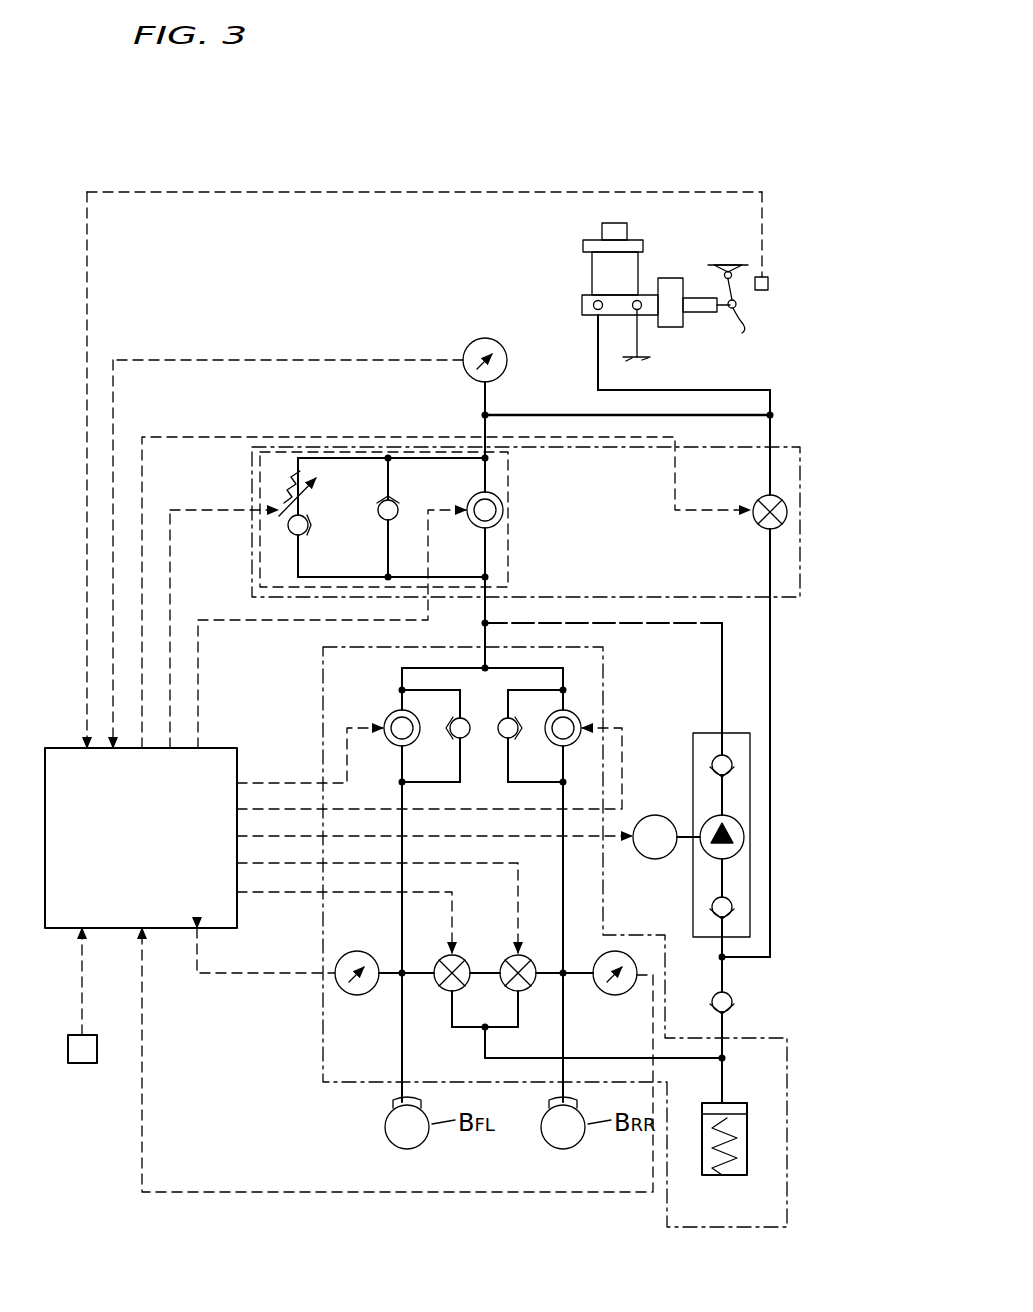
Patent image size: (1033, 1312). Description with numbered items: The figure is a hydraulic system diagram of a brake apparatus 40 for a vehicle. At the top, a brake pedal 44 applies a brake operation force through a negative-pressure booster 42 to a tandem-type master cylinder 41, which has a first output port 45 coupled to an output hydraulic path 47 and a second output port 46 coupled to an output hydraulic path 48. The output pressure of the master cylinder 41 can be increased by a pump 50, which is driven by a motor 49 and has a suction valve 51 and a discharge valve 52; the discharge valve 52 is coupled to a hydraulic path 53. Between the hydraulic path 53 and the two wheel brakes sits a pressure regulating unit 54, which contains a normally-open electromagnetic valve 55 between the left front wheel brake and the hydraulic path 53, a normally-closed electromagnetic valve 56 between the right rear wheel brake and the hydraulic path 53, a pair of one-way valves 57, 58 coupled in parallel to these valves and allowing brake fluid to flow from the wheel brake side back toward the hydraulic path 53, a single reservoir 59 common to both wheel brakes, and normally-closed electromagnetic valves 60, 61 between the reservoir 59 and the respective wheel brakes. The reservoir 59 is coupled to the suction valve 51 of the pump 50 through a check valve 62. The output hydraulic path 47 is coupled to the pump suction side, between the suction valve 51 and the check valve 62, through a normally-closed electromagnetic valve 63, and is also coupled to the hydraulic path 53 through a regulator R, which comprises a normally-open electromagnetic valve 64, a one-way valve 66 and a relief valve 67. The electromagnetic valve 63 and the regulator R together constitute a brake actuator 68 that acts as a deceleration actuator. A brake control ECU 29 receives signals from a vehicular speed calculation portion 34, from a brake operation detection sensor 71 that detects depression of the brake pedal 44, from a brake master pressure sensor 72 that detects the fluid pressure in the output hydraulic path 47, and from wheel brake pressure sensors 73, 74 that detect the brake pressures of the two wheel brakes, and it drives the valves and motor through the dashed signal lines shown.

The brake apparatus 40 is at (215, 176).
The brake control ECU 29 is at (218, 746).
The vehicular speed calculation portion 34 is at (84, 1063).
The brake operation detection sensor 71 is at (768, 284).
The master cylinder 41 is at (582, 298).
The first output port 45 is at (593, 308).
The second output port 46 is at (640, 300).
The negative-pressure booster 42 is at (672, 278).
The output hydraulic path 48 is at (638, 353).
The brake pedal 44 is at (748, 325).
The brake master pressure sensor 72 is at (508, 360).
The output hydraulic path 47 is at (560, 414).
The brake actuator 68 is at (787, 448).
The regulator R is at (508, 475).
The hydraulic path 53 is at (495, 605).
The relief valve 67 is at (308, 527).
The one-way valve 66 is at (396, 504).
The normally-open electromagnetic valve 64 is at (504, 510).
The normally-closed electromagnetic valve 63 is at (763, 529).
The pressure regulating unit 54 is at (323, 1060).
The normally-open electromagnetic valve 55 is at (415, 722).
The one-way valve 57 is at (468, 720).
The one-way valve 58 is at (518, 722).
The normally-closed electromagnetic valve 56 is at (578, 718).
The pump 50 is at (740, 733).
The discharge valve 52 is at (733, 771).
The suction valve 51 is at (733, 912).
The motor 49 is at (660, 860).
The check valve 62 is at (733, 1008).
The reservoir 59 is at (747, 1137).
The wheel brake pressure sensor 73 is at (358, 996).
The normally-closed electromagnetic valve 60 is at (445, 993).
The normally-closed electromagnetic valve 61 is at (524, 993).
The wheel brake pressure sensor 74 is at (616, 996).